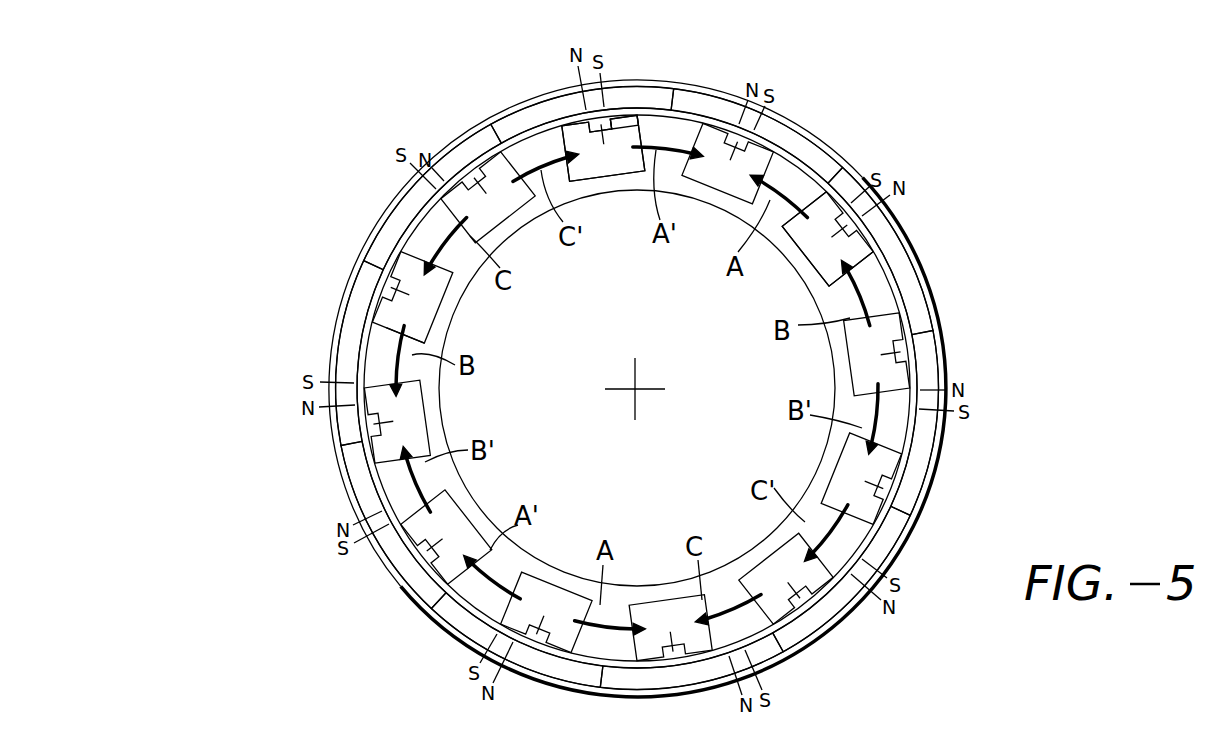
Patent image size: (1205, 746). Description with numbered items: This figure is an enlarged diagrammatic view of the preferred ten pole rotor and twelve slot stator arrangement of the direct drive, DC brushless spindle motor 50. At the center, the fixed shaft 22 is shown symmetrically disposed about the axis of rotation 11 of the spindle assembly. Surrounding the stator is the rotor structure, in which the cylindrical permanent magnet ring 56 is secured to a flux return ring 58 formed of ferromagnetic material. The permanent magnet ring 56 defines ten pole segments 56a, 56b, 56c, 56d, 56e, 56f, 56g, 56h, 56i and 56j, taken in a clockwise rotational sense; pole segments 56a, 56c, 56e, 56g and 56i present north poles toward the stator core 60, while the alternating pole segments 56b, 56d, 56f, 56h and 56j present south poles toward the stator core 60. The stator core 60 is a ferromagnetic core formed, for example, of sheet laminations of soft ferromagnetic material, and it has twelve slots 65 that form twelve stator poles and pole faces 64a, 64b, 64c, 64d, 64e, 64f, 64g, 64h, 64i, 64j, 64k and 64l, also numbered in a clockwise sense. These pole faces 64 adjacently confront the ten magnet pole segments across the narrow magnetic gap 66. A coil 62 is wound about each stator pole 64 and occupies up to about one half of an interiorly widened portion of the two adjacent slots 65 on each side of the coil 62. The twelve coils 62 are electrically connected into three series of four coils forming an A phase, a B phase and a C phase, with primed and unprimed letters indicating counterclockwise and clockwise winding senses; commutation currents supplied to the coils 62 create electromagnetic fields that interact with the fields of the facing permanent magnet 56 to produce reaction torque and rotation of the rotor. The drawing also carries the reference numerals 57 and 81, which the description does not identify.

The axis of rotation 11 is at (637, 387).
The shaft 22 is at (672, 295).
The spindle motor 50 is at (355, 632).
The permanent magnet 56 is at (885, 224).
The pole segment 56a is at (816, 134).
The pole segment 56b is at (929, 290).
The pole segment 56c is at (930, 474).
The pole segment 56d is at (836, 622).
The pole segment 56e is at (684, 685).
The pole segment 56f is at (563, 682).
The pole segment 56g is at (418, 588).
The pole segment 56h is at (357, 282).
The pole segment 56i is at (453, 128).
The pole segment 56j is at (553, 110).
The magnet pole boundaries 57 is at (499, 140).
The flux return ring 58 is at (801, 128).
The stator core 60 is at (520, 236).
The coil 62 is at (688, 128).
The stator pole face 64 is at (648, 122).
The stator pole 64a is at (712, 123).
The stator pole 64b is at (780, 132).
The stator pole 64c is at (896, 239).
The stator pole 64d is at (930, 367).
The stator pole 64e is at (900, 540).
The stator pole 64f is at (806, 645).
The stator pole 64g is at (530, 686).
The stator pole 64h is at (470, 648).
The stator pole 64i is at (352, 500).
The stator pole 64j is at (352, 360).
The stator pole 64k is at (396, 206).
The stator pole 64l is at (523, 108).
The stator slot 65 is at (636, 383).
The magnetic gap 66 is at (380, 293).
The flux return ring 81 is at (940, 444).